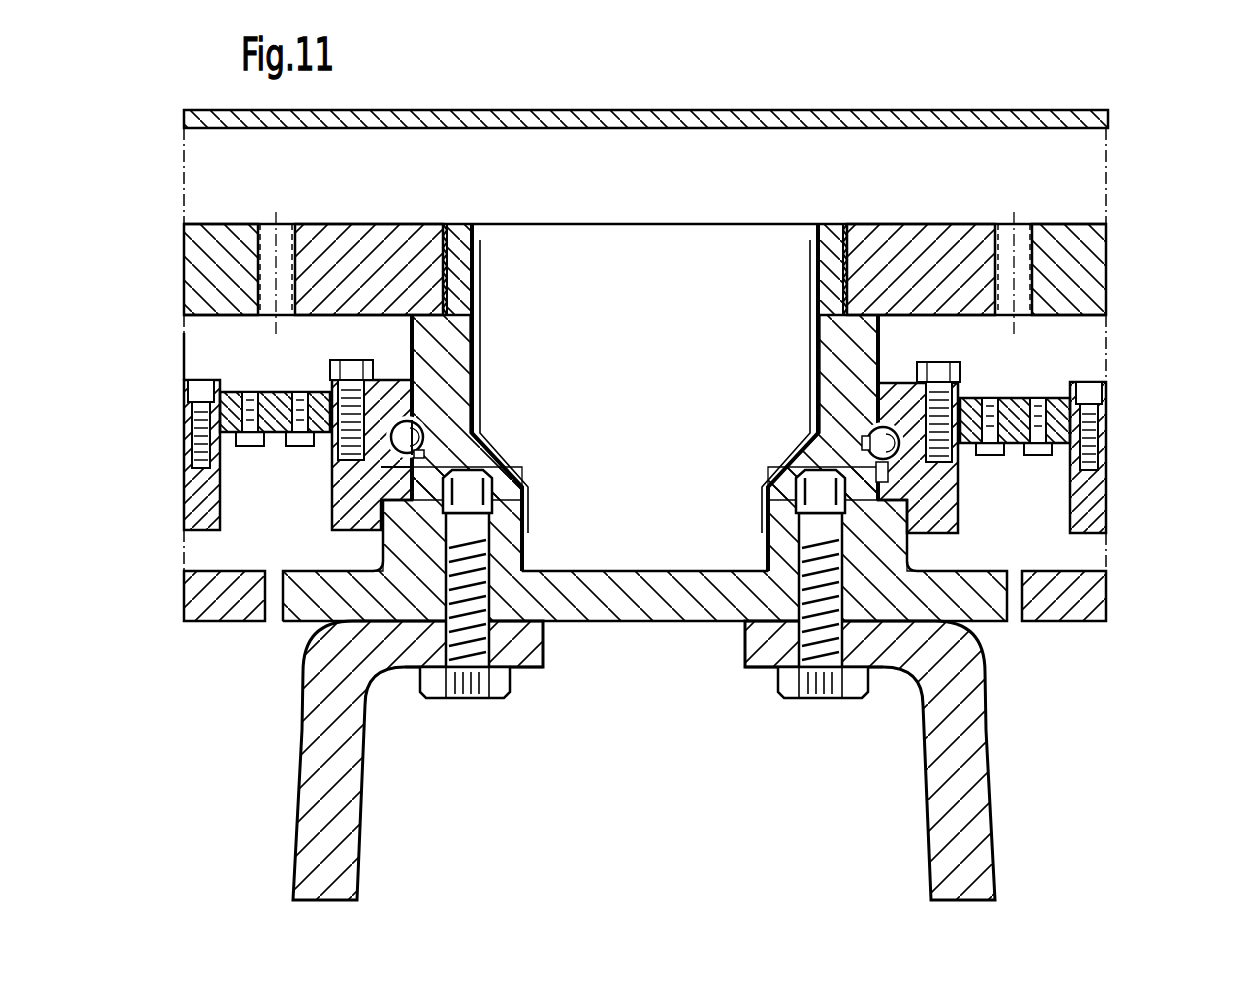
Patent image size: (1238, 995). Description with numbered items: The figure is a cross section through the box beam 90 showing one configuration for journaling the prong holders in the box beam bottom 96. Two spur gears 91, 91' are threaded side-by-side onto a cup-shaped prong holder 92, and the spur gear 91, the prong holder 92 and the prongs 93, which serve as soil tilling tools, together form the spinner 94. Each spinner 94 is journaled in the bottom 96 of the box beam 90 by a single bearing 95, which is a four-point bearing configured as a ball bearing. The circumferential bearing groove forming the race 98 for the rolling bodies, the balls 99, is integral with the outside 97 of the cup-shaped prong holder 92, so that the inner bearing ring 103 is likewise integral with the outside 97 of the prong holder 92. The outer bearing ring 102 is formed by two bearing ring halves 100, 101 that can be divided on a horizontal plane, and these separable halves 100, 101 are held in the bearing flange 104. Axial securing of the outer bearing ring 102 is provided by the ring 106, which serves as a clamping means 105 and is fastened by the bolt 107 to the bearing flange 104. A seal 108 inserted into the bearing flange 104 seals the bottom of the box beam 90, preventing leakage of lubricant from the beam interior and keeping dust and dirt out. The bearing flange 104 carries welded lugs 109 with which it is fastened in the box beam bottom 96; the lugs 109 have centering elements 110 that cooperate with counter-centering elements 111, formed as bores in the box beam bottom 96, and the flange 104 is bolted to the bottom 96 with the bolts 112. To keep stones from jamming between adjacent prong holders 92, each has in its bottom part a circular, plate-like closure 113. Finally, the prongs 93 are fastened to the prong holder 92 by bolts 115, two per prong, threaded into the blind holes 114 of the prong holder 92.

The box beam 90 is at (1122, 129).
The spur gear 91 is at (645, 239).
The spur gear 91' is at (645, 235).
The cup-shaped prong holder 92 is at (583, 576).
The prong 93 is at (338, 802).
The spinner 94 is at (284, 805).
The bearing 95 is at (450, 413).
The box beam bottom 96 is at (268, 392).
The outside of the cup-shaped prong holder 97 is at (871, 352).
The race 98 is at (473, 380).
The ball 99 is at (433, 438).
The bearing ring half 100 is at (474, 341).
The bearing ring half 101 is at (424, 454).
The outer bearing ring 102 is at (412, 467).
The inner bearing ring 103 is at (860, 448).
The bearing flange 104 is at (960, 528).
The clamping means 105 is at (959, 352).
The ring 106 is at (380, 380).
The bolt 107 is at (332, 360).
The seal 108 is at (882, 482).
The welded lug 109 is at (323, 444).
The centering element 110 is at (190, 450).
The counter-centering element 111 is at (248, 392).
The bolt 112 is at (283, 446).
The circular plate-like closure 113 is at (320, 606).
The blind hole 114 is at (476, 498).
The bolt 115 is at (503, 689).